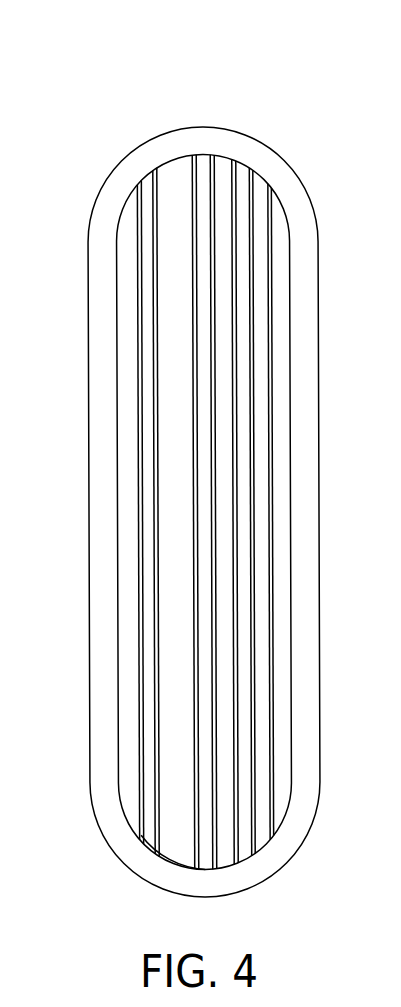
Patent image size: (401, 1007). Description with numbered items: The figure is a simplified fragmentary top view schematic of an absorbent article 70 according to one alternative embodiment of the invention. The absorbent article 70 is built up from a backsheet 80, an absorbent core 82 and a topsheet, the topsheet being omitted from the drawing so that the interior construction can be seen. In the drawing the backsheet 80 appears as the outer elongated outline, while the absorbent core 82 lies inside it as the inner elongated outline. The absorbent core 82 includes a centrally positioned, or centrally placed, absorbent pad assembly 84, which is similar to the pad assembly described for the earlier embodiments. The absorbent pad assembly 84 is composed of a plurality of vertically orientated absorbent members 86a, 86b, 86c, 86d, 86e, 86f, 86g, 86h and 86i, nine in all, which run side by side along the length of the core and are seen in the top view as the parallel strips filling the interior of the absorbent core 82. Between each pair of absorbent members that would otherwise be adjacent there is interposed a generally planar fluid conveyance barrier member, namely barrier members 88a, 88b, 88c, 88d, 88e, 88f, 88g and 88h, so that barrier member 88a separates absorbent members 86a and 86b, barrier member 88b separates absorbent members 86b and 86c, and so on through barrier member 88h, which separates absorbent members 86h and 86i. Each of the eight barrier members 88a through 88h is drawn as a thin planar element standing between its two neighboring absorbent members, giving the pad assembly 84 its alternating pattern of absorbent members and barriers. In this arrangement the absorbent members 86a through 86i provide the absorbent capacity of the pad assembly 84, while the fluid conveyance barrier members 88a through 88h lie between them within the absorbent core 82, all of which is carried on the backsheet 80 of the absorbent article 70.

The absorbent article 70 is at (299, 91).
The backsheet 80 is at (121, 176).
The absorbent core 82 is at (142, 859).
The absorbent pad assembly 84 is at (297, 301).
The absorbent member 86a is at (127, 678).
The absorbent member 86b is at (150, 628).
The absorbent member 86c is at (168, 540).
The absorbent member 86d is at (185, 478).
The absorbent member 86e is at (205, 477).
The absorbent member 86f is at (222, 548).
The absorbent member 86g is at (242, 627).
The absorbent member 86h is at (262, 680).
The absorbent member 86i is at (283, 768).
The fluid conveyance barrier member 88a is at (140, 652).
The fluid conveyance barrier member 88b is at (157, 586).
The fluid conveyance barrier member 88c is at (157, 507).
The fluid conveyance barrier member 88d is at (195, 443).
The fluid conveyance barrier member 88e is at (213, 505).
The fluid conveyance barrier member 88f is at (232, 590).
The fluid conveyance barrier member 88g is at (253, 653).
The fluid conveyance barrier member 88h is at (273, 730).